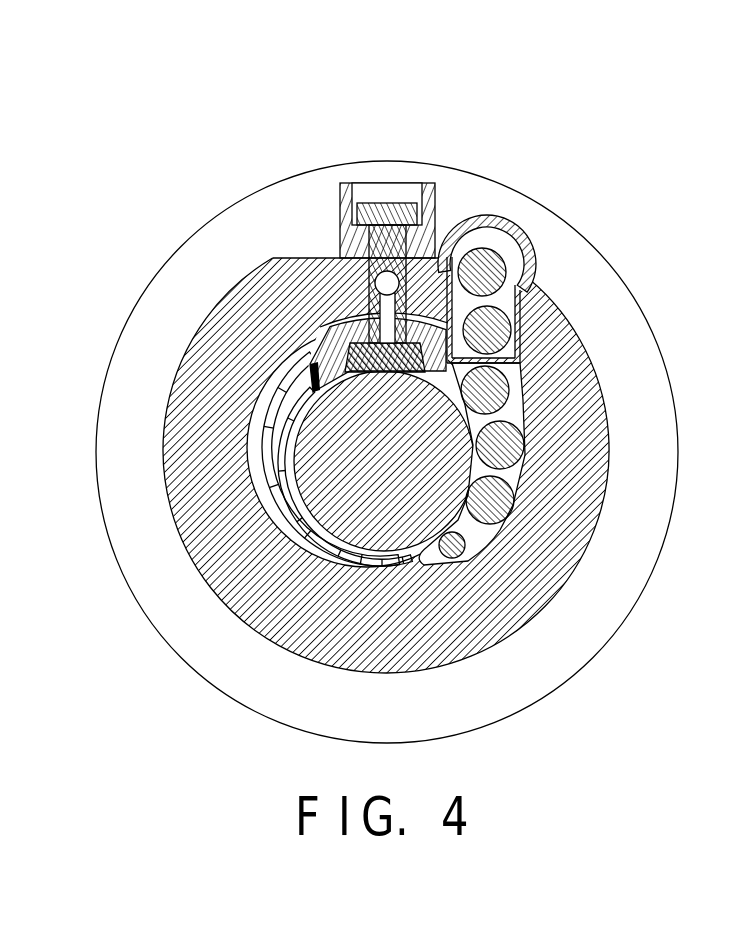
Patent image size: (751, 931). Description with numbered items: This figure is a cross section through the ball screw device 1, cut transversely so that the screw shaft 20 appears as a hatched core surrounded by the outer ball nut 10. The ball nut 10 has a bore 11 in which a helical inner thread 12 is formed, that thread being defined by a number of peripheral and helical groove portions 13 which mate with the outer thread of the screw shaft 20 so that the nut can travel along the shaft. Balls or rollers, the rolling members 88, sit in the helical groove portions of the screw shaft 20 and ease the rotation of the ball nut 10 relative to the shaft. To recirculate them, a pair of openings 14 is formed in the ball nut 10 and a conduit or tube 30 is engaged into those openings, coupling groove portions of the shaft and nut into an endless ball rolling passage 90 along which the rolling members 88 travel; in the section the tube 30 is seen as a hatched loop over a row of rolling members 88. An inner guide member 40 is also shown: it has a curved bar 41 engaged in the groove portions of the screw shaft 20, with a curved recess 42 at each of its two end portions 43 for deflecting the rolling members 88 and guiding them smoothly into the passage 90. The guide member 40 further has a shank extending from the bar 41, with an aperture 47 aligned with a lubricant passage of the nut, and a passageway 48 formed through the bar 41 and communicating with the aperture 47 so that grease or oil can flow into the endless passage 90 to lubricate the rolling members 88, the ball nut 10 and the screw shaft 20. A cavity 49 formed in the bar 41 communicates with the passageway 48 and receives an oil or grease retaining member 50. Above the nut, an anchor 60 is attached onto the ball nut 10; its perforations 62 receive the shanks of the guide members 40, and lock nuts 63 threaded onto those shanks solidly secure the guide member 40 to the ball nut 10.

The ball screw device 1 is at (314, 124).
The outer ball nut 10 is at (592, 489).
The bore 11 is at (278, 520).
The inner thread 12 is at (322, 564).
The peripheral and helical groove portions 13 is at (523, 474).
The openings 14 is at (528, 242).
The screw shaft 20 is at (254, 483).
The conduit or tube 30 is at (496, 212).
The inner guide member 40 is at (396, 197).
The bar 41 is at (327, 350).
The curved recess 42 is at (306, 372).
The end portions 43 is at (519, 401).
The aperture 47 is at (367, 238).
The passageway 48 is at (386, 312).
The cavity 49 is at (410, 360).
The oil or grease retaining member 50 is at (318, 463).
The anchor 60 is at (454, 236).
The perforations 62 is at (362, 230).
The lock nuts 63 is at (366, 207).
The rolling members 88 is at (492, 330).
The endless ball rolling passage 90 is at (489, 543).